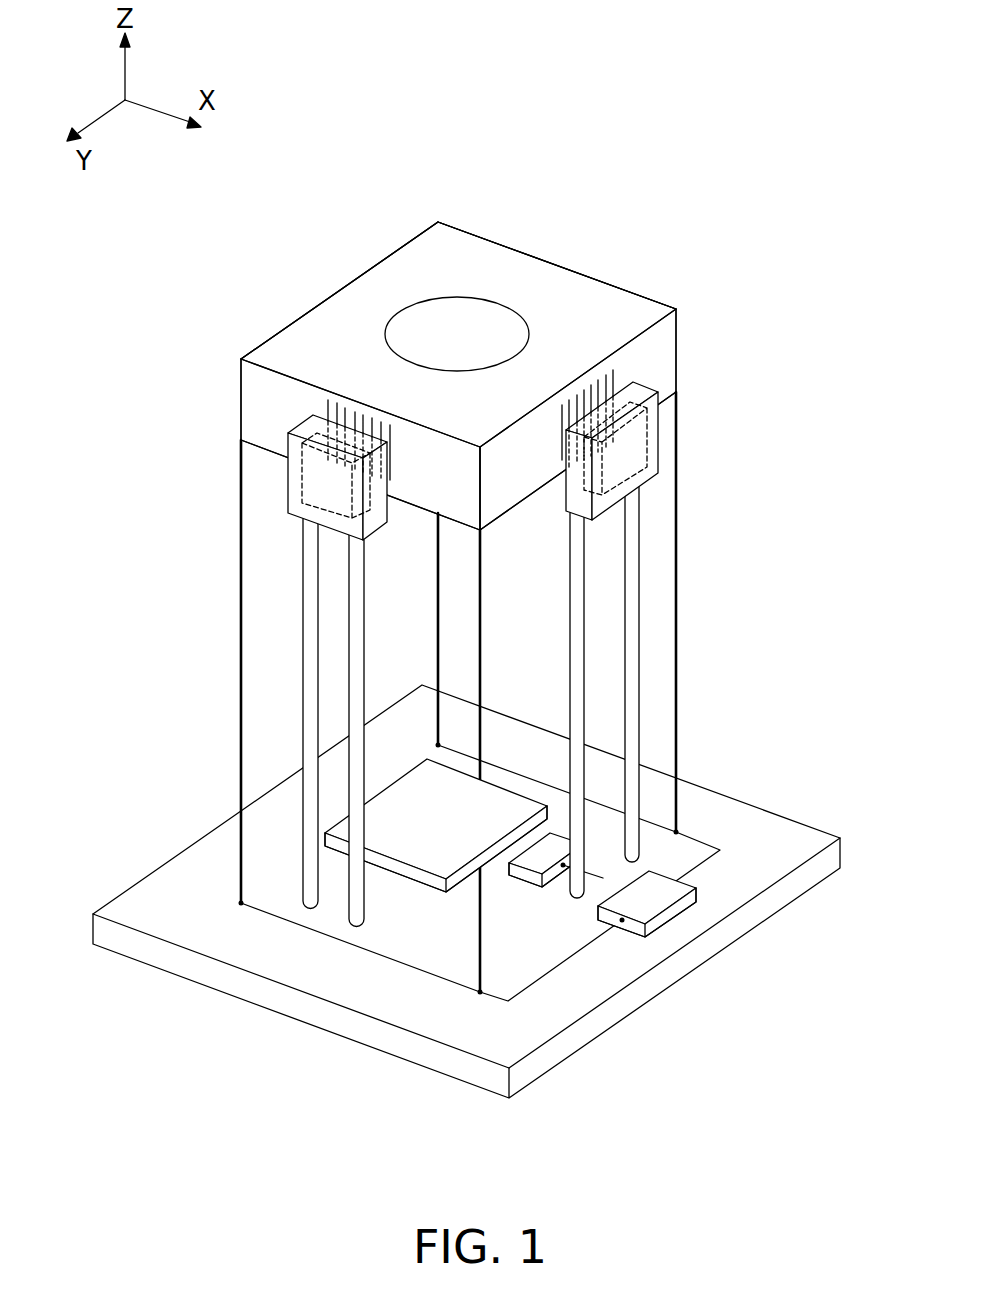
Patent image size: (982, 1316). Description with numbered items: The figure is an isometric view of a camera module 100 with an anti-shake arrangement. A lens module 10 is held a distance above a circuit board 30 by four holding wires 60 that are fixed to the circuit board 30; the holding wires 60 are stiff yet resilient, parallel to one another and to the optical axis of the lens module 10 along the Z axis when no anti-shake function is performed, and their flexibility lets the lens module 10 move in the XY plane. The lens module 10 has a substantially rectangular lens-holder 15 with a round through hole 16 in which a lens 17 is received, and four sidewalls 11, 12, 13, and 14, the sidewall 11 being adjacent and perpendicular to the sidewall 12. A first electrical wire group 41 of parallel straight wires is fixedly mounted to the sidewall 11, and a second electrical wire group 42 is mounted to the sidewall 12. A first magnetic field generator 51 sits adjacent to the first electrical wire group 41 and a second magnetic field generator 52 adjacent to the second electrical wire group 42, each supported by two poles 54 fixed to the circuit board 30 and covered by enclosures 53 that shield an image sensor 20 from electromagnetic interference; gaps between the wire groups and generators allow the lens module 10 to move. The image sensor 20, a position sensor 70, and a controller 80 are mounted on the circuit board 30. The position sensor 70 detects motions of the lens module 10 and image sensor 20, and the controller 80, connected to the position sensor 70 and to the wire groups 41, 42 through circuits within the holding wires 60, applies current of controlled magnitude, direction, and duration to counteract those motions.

The camera module 100 is at (472, 64).
The lens module 10 is at (479, 335).
The sidewall 11 is at (264, 378).
The sidewall 12 is at (663, 367).
The sidewall 13 is at (531, 250).
The sidewall 14 is at (376, 258).
The lens-holder 15 is at (590, 310).
The through hole 16 is at (432, 297).
The lens 17 is at (457, 333).
The image sensor 20 is at (425, 880).
The circuit board 30 is at (778, 896).
The first electrical wire group 41 is at (328, 418).
The second electrical wire group 42 is at (613, 373).
The first magnetic field generator 51 is at (310, 470).
The second magnetic field generator 52 is at (635, 448).
The enclosures 53 is at (283, 478).
The poles 54 is at (312, 738).
The holding wires 60 is at (241, 650).
The position sensor 70 is at (530, 877).
The controller 80 is at (673, 912).